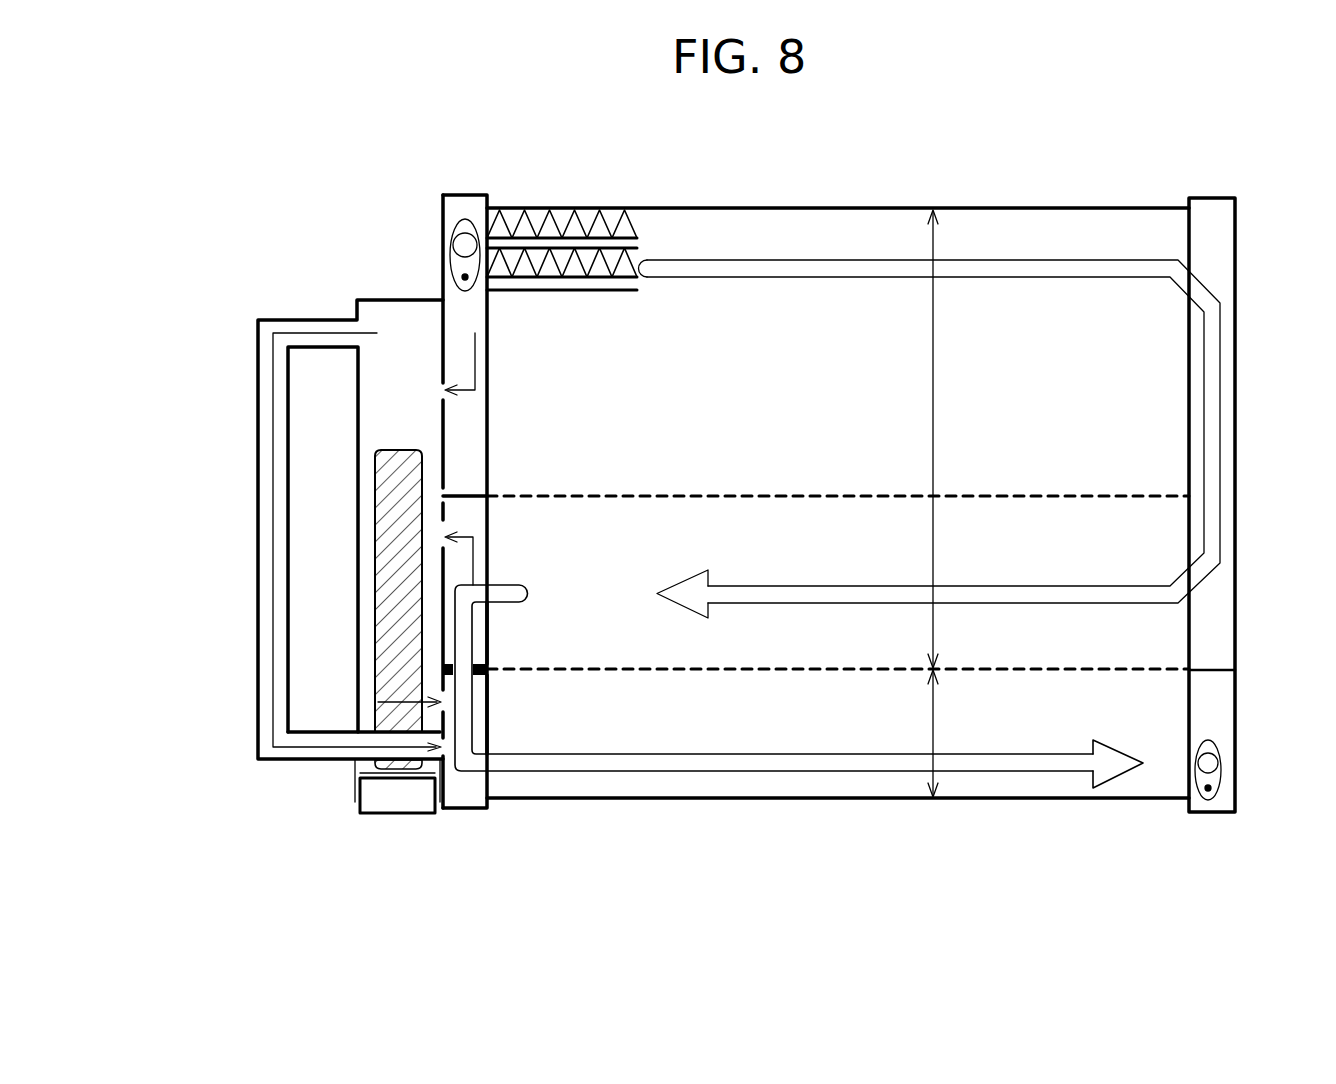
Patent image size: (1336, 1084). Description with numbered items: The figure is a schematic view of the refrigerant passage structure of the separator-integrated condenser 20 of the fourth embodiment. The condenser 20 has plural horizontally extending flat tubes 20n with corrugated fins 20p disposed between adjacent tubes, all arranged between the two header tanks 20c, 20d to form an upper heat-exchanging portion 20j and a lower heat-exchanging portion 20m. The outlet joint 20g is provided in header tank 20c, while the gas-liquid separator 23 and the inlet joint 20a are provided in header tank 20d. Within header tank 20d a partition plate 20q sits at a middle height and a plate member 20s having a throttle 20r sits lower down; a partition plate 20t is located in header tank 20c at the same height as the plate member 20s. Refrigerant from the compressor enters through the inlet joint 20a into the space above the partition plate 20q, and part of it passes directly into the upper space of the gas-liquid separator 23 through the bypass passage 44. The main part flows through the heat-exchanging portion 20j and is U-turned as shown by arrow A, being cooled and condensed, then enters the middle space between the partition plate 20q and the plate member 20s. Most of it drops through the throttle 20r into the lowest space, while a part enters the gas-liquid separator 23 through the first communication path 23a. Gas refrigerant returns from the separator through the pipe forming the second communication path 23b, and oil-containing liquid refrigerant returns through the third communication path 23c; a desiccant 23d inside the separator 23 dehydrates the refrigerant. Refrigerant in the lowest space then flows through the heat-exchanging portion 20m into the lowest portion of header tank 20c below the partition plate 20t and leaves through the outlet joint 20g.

The condenser 20 is at (863, 203).
The inlet joint 20a is at (461, 245).
The header tank 20c is at (1210, 213).
The header tank 20d is at (464, 195).
The outlet joint 20g is at (1212, 763).
The heat-exchanging portion 20j is at (955, 439).
The heat-exchanging portion 20m is at (816, 730).
The flat tubes 20n is at (617, 249).
The corrugated fins 20p is at (508, 208).
The partition plate 20q is at (463, 495).
The throttle 20r is at (465, 673).
The plate member 20s is at (480, 675).
The partition plate 20t is at (1207, 675).
The gas-liquid separator 23 is at (375, 415).
The first communication path 23a is at (443, 530).
The second communication path 23b is at (267, 618).
The third communication path 23c is at (440, 694).
The desiccant 23d is at (383, 480).
The bypass passage 44 is at (443, 386).
The arrow A is at (1032, 260).